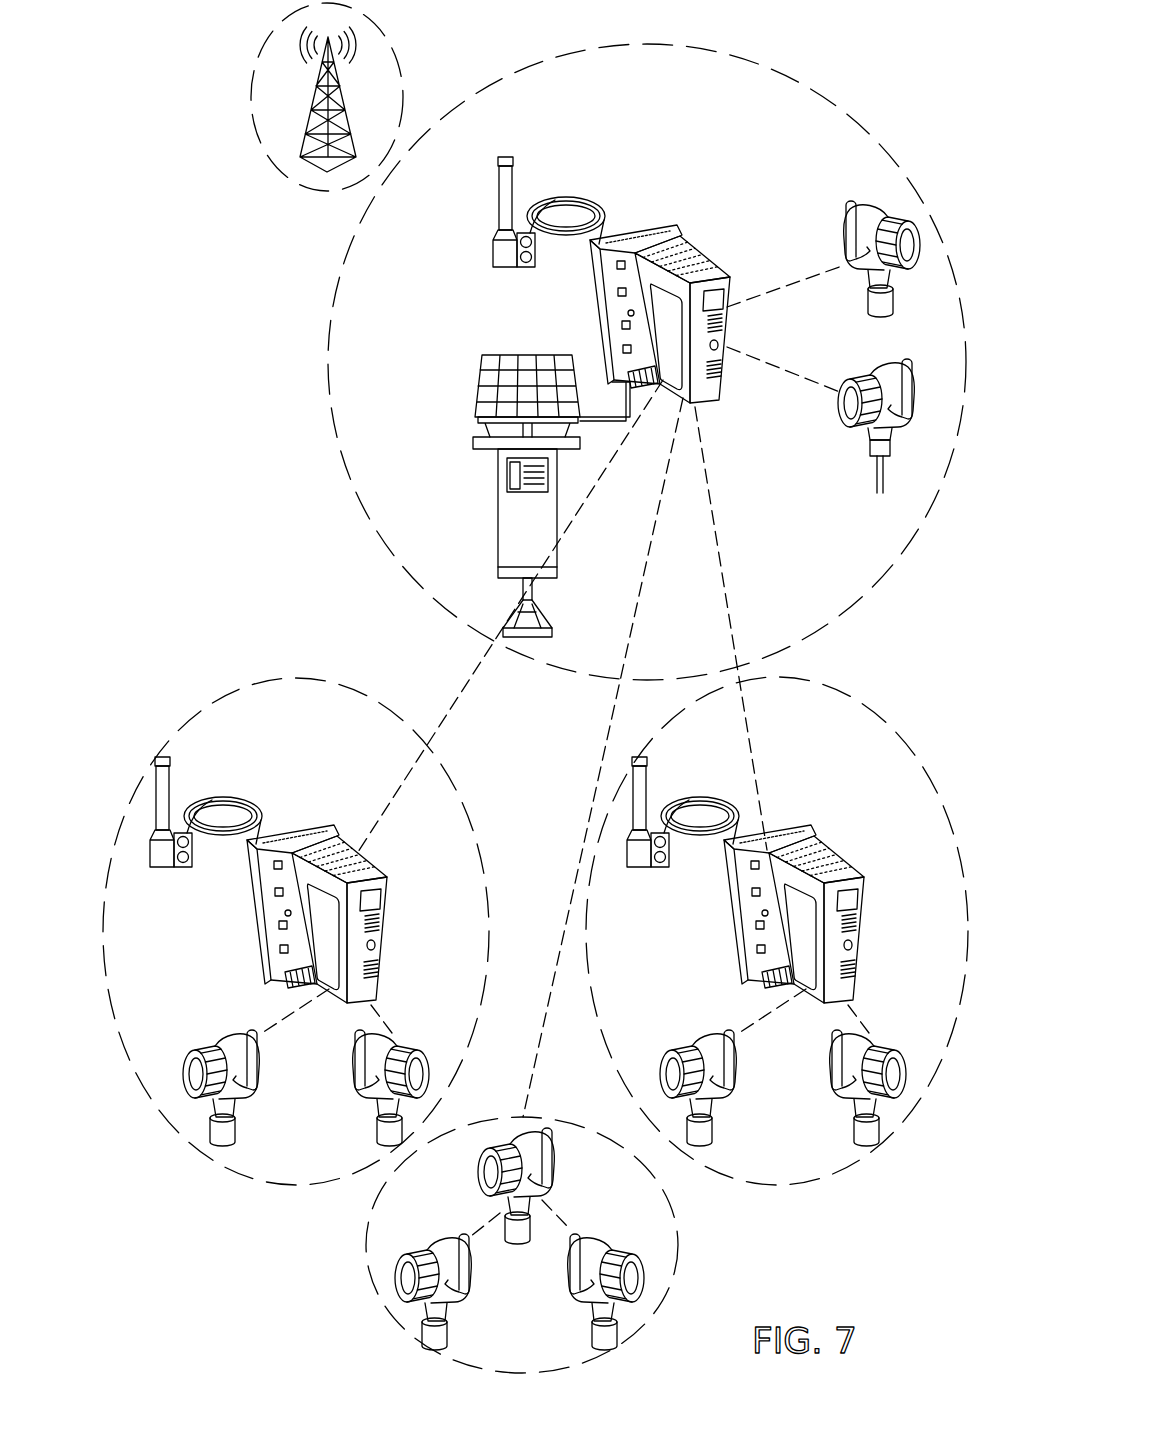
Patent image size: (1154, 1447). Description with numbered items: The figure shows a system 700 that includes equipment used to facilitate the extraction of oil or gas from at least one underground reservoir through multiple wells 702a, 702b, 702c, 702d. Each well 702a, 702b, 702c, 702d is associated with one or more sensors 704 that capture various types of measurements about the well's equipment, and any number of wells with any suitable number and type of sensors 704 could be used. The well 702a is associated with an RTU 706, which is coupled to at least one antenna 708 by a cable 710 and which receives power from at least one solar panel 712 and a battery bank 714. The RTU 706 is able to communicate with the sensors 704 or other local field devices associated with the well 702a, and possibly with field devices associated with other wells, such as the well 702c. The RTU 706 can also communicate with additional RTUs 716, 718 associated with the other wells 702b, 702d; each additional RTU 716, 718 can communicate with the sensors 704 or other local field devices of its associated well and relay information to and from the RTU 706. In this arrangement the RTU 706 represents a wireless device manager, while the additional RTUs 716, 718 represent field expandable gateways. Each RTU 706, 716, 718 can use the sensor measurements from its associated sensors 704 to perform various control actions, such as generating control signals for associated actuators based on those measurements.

The system 700 is at (737, 1222).
The well 702a is at (779, 63).
The well 702b is at (262, 1183).
The well 702c is at (368, 1252).
The well 702d is at (841, 1175).
The sensors 704 is at (845, 425).
The RTU 706 is at (715, 403).
The antenna 708 is at (498, 205).
The cable 710 is at (577, 197).
The solar panel 712 is at (480, 385).
The battery bank 714 is at (498, 517).
The additional RTU 716 is at (384, 960).
The additional RTU 718 is at (827, 865).